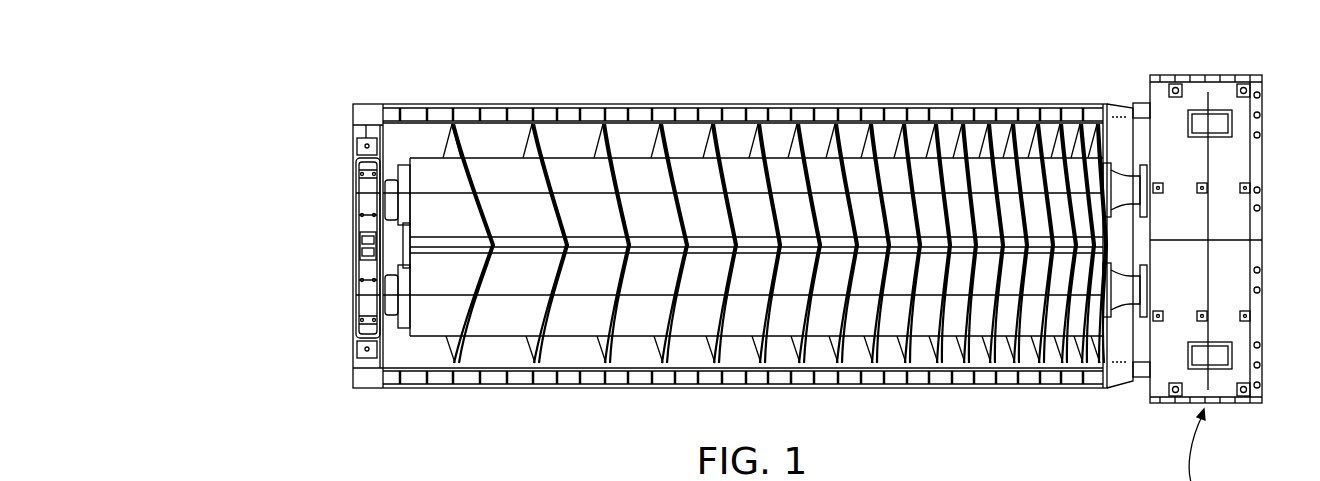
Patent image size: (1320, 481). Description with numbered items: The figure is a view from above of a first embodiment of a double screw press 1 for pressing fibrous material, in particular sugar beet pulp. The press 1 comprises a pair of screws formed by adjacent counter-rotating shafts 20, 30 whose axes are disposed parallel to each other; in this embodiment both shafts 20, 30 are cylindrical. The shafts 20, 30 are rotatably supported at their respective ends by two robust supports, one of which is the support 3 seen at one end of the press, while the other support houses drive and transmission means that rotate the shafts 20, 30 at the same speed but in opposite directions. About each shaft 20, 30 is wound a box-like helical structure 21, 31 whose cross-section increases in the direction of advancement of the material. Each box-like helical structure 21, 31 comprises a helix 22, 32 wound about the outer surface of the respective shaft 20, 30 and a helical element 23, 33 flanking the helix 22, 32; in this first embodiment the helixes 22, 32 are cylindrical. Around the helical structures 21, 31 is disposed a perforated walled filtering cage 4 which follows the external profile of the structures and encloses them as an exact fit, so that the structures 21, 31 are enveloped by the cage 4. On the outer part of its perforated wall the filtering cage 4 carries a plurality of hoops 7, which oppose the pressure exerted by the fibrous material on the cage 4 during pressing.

The double screw press 1 is at (293, 163).
The support 3 is at (366, 400).
The perforated walled filtering cage 4 is at (682, 120).
The hoops 7 is at (900, 117).
The shaft 20 is at (1088, 385).
The box-like helical structure 21 is at (742, 355).
The helix 22 is at (466, 362).
The helical element 23 is at (578, 340).
The shaft 30 is at (1082, 140).
The box-like helical structure 31 is at (590, 148).
The helix 32 is at (455, 139).
The helical element 33 is at (775, 148).